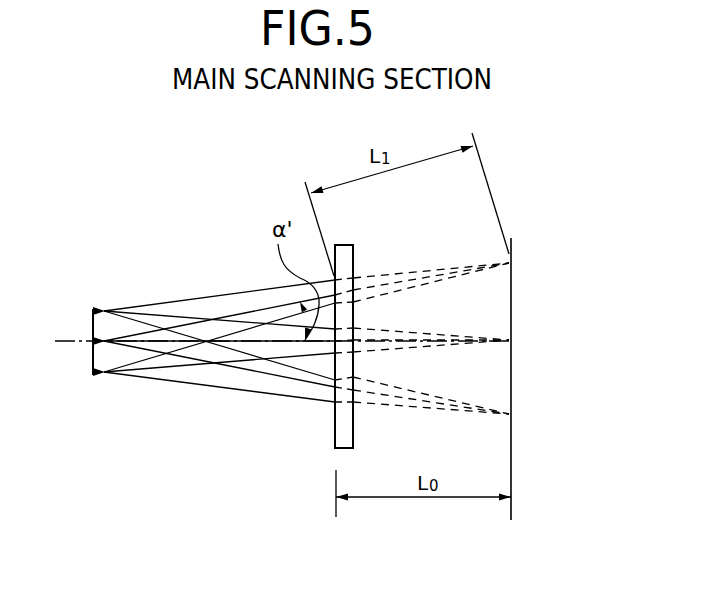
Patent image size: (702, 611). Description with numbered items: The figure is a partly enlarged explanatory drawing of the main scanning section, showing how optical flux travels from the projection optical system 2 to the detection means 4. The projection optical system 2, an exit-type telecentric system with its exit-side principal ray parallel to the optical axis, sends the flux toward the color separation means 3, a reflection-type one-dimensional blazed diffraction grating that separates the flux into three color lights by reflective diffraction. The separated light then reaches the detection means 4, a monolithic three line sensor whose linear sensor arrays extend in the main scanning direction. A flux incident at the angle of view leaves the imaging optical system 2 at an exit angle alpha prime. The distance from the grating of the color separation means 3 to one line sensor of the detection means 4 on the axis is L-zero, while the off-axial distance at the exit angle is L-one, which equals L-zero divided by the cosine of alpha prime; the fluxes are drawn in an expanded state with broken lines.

The projection optical system 2 is at (92, 369).
The color separation means 3 is at (342, 245).
The detection means 4 is at (508, 248).